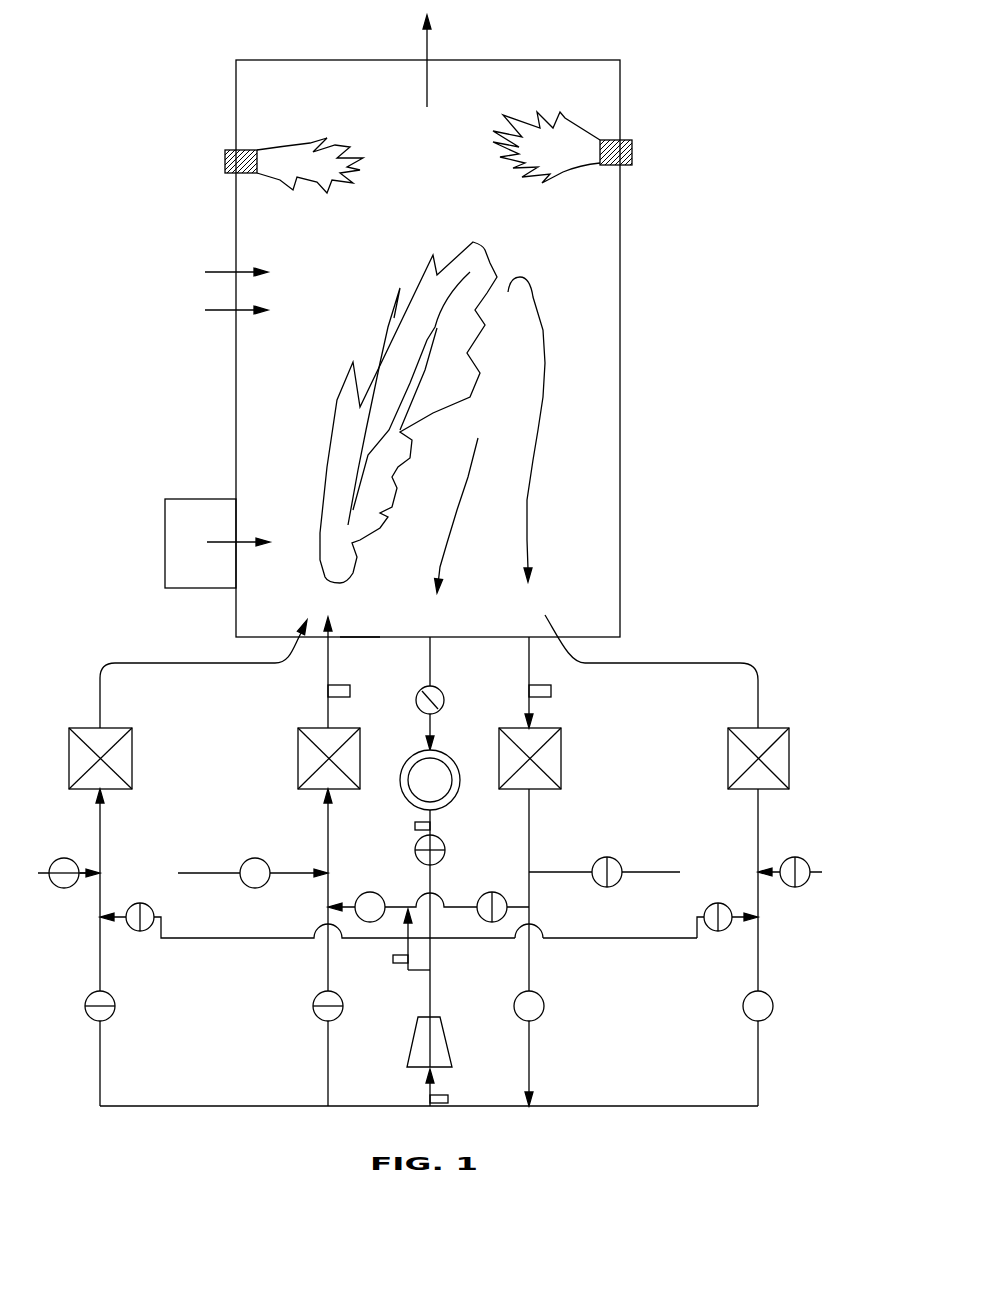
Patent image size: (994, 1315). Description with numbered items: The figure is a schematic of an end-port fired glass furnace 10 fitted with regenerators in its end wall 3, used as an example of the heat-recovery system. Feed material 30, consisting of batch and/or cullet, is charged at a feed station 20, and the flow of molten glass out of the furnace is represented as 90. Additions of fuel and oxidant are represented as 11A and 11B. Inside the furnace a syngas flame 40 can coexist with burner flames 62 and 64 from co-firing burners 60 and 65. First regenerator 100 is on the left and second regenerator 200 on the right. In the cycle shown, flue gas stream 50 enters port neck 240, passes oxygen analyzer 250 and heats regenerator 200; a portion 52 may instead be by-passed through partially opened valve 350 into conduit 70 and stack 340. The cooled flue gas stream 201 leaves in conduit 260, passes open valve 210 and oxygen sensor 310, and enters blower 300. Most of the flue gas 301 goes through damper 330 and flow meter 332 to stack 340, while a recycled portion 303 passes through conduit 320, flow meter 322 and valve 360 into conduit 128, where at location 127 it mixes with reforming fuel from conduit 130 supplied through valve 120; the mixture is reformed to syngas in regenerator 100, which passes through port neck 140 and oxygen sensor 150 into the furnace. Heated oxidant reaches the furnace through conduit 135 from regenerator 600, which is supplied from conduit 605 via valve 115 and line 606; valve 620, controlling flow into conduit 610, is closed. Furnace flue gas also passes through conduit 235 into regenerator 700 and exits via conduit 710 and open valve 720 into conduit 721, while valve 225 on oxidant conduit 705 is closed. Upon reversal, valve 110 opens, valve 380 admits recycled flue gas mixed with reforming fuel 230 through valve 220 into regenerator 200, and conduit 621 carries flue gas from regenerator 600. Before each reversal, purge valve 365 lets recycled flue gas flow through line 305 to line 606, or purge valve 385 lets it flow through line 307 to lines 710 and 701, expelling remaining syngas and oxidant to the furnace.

The end wall 3 is at (358, 637).
The end-port glass furnace 10 is at (620, 312).
The fuel addition 11A is at (232, 262).
The oxidant addition 11B is at (232, 300).
The feed station 20 is at (202, 499).
The feed material 30 is at (243, 541).
The syngas flame 40 is at (355, 349).
The flue gas stream 50 is at (532, 424).
The by-passed flue gas portion 52 is at (492, 544).
The burner 60 is at (226, 152).
The burner flame 62 is at (284, 182).
The burner flame 64 is at (500, 158).
The burner 65 is at (627, 142).
The conduit 70 is at (429, 652).
The molten glass flow 90 is at (443, 61).
The first regenerator 100 is at (297, 790).
The valve 110 is at (313, 1010).
The valve 115 is at (55, 888).
The valve 120 is at (250, 888).
The mixing location 127 is at (330, 873).
The conduit 128 is at (327, 812).
The reforming fuel conduit 130 is at (207, 875).
The oxidant conduit 135 is at (190, 662).
The port neck 140 is at (368, 676).
The oxygen sensor 150 is at (351, 692).
The second regenerator 200 is at (563, 773).
The cooled flue gas stream 201 is at (531, 843).
The valve 210 is at (547, 1003).
The valve 220 is at (609, 887).
The valve 225 is at (795, 887).
The reforming fuel 230 is at (642, 875).
The conduit 235 is at (687, 662).
The port neck 240 is at (528, 658).
The oxygen analyzer 250 is at (552, 693).
The conduit 260 is at (533, 940).
The blower 300 is at (452, 1050).
The flue gas 301 is at (433, 935).
The recycled flue gas portion 303 is at (421, 962).
The line 305 is at (253, 939).
The line 307 is at (630, 940).
The oxygen sensor 310 is at (449, 1095).
The conduit 320 is at (407, 992).
The flow meter 322 is at (393, 957).
The damper 330 is at (446, 843).
The flow meter 332 is at (414, 826).
The stack 340 is at (495, 786).
The valve 350 is at (444, 702).
The valve 360 is at (368, 893).
The oxidant purge line valve 365 is at (136, 904).
The valve 380 is at (481, 896).
The oxidant purge line valve 385 is at (710, 902).
The regenerator 600 is at (69, 745).
The conduit 605 is at (46, 868).
The line 606 is at (102, 843).
The conduit 610 is at (376, 1105).
The valve 620 is at (92, 1021).
The conduit 621 is at (99, 968).
The regenerator 700 is at (789, 745).
The line 701 is at (760, 828).
The conduit 705 is at (817, 862).
The conduit 710 is at (760, 975).
The valve 720 is at (768, 1020).
The conduit 721 is at (492, 1108).